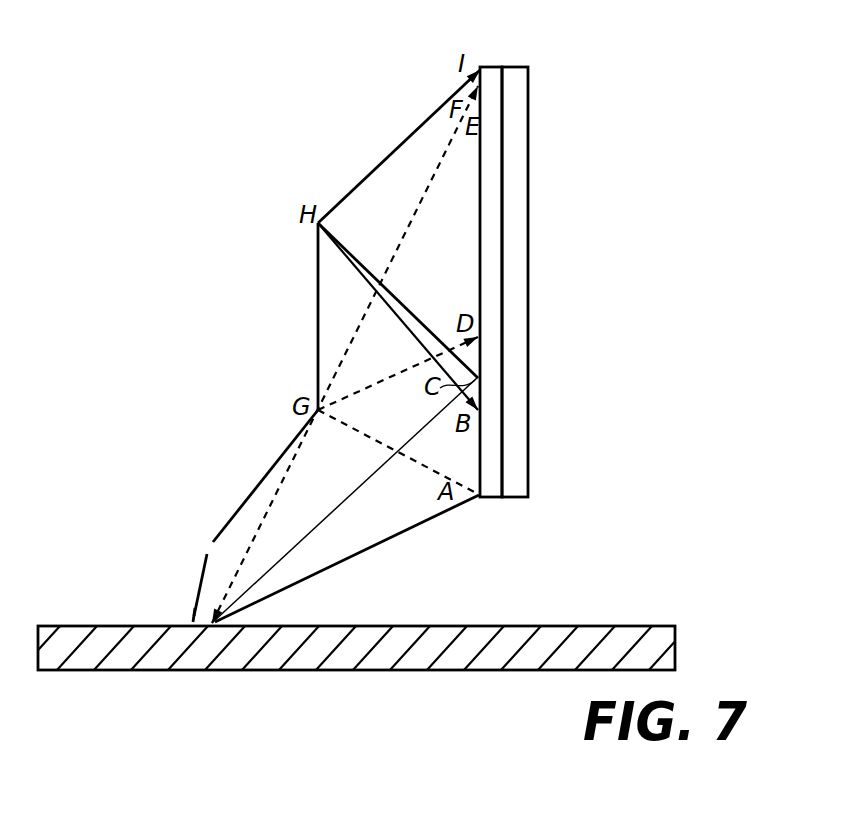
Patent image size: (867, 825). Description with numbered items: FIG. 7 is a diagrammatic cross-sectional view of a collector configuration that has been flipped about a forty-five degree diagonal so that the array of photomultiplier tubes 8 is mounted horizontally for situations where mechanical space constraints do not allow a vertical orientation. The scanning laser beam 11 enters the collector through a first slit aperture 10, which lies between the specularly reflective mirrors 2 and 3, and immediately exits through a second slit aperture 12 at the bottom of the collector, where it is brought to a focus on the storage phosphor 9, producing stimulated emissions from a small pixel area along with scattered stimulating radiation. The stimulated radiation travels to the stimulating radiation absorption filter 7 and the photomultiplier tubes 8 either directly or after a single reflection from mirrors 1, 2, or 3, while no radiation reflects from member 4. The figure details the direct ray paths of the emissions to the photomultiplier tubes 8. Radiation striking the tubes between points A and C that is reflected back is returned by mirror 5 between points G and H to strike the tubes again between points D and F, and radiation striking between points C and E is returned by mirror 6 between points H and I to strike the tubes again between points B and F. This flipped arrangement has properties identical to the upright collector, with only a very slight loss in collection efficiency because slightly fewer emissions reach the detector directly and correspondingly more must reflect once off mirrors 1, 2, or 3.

The mirror 1 is at (193, 609).
The mirror 2 is at (201, 574).
The mirror 3 is at (283, 455).
The member 4 is at (360, 553).
The mirror 5 is at (316, 321).
The mirror 6 is at (407, 134).
The stimulating radiation absorption filter 7 is at (493, 260).
The photomultiplier tubes 8 is at (513, 292).
The storage phosphor 9 is at (462, 643).
The first slit aperture 10 is at (202, 543).
The scanning laser beam 11 is at (210, 497).
The second slit aperture 12 is at (257, 615).